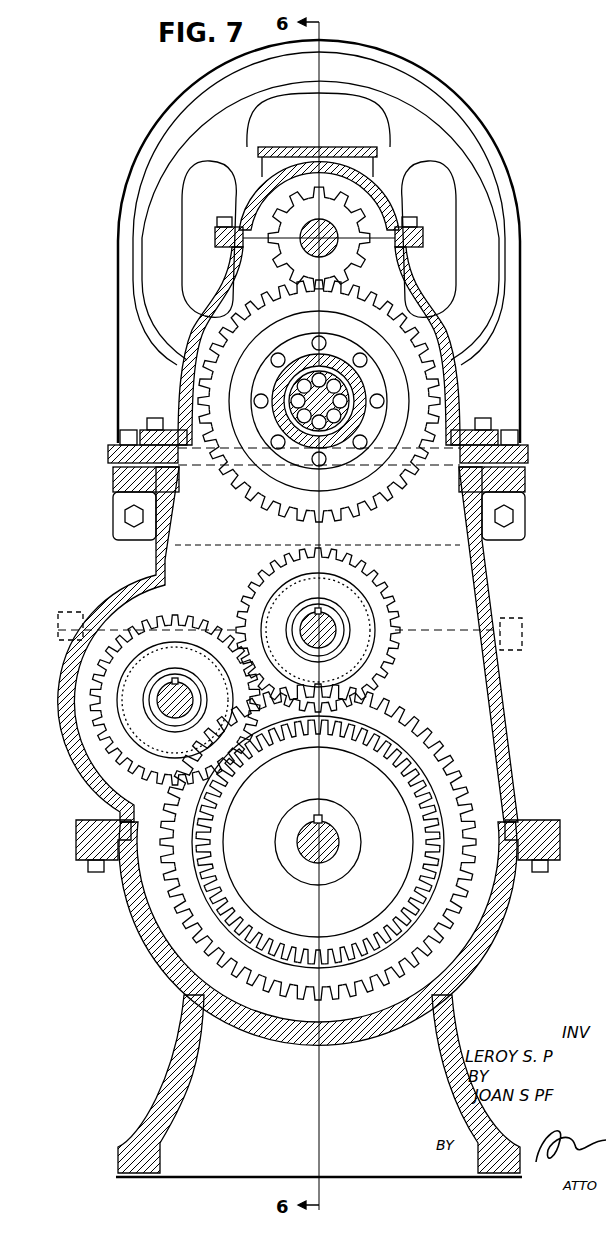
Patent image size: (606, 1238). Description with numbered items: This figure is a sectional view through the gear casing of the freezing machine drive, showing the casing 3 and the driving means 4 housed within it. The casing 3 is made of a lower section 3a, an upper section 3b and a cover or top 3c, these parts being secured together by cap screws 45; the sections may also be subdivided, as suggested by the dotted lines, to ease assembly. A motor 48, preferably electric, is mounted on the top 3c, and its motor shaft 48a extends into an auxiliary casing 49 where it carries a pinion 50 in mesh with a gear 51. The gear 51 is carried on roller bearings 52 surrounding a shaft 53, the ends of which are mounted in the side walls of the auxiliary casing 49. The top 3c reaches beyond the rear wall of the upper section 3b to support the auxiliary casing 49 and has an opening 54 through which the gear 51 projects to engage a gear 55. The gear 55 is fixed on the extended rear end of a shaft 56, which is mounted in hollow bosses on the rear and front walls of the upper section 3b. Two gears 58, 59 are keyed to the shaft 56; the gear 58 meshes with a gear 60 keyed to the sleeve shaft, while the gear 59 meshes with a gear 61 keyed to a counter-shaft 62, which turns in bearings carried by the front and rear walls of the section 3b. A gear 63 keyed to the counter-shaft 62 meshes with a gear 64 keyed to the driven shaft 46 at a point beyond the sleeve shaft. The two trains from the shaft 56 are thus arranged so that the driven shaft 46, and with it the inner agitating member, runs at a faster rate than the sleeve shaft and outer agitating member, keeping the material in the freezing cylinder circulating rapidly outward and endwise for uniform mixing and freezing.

The casing 3 is at (318, 830).
The lower section 3a is at (470, 984).
The upper section 3b is at (506, 668).
The cover or top 3c is at (530, 458).
The driving means 4 is at (290, 656).
The cap screws 45 is at (548, 872).
The driven shaft 46 is at (340, 856).
The motor 48 is at (518, 225).
The motor shaft 48a is at (300, 200).
The auxiliary casing 49 is at (408, 292).
The pinion 50 is at (338, 220).
The gear 51 is at (432, 397).
The roller bearings 52 is at (346, 356).
The shaft 53 is at (292, 358).
The opening 54 is at (204, 478).
The gear 55 is at (366, 538).
The shaft 56 is at (392, 604).
The gear 58 is at (378, 592).
The gear 59 is at (396, 652).
The gear 60 is at (436, 734).
The gear 61 is at (72, 700).
The counter-shaft 62 is at (178, 680).
The gear 63 is at (192, 616).
The gear 64 is at (344, 948).